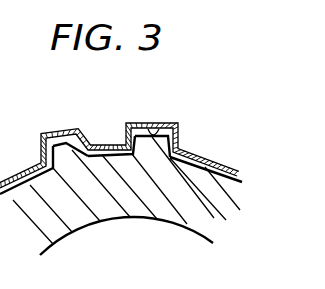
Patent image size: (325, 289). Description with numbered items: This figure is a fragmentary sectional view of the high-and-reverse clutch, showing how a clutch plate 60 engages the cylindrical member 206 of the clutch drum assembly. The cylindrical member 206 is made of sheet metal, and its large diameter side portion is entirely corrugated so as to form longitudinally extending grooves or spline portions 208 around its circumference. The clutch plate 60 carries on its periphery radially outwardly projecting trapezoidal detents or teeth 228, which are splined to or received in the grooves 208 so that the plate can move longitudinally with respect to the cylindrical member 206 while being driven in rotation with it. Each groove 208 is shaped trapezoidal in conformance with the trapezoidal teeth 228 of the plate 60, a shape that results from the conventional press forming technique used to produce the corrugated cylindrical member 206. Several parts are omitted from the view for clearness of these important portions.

The clutch plate 60 is at (159, 208).
The trapezoidal teeth 228 is at (68, 146).
The grooves 208 is at (161, 130).
The cylindrical member 206 is at (202, 152).